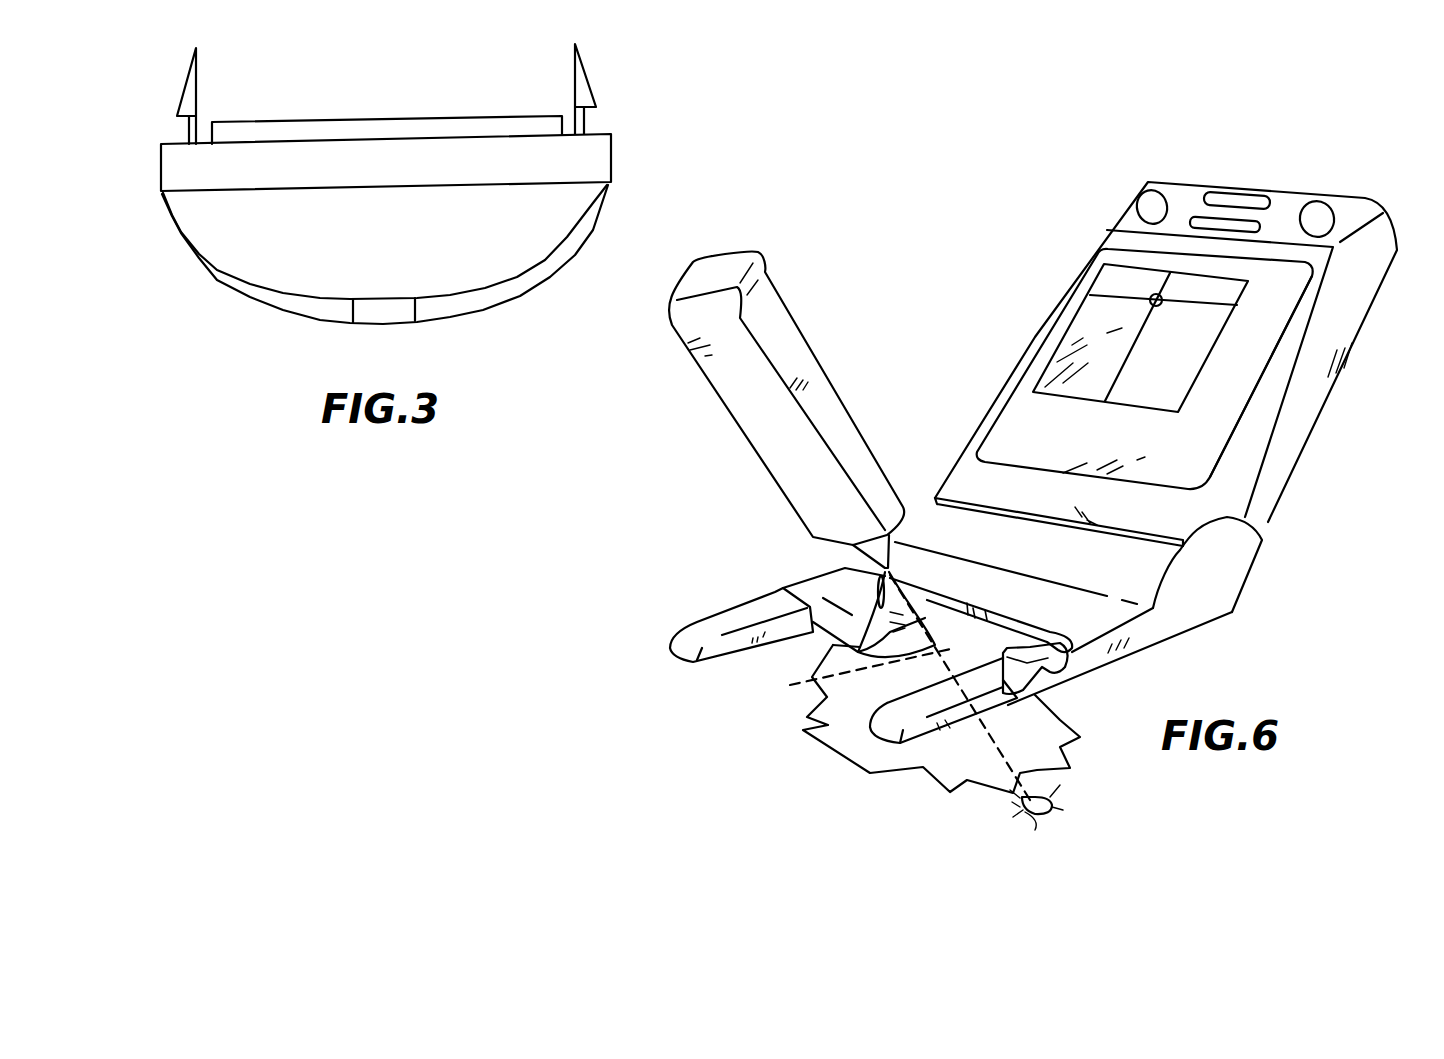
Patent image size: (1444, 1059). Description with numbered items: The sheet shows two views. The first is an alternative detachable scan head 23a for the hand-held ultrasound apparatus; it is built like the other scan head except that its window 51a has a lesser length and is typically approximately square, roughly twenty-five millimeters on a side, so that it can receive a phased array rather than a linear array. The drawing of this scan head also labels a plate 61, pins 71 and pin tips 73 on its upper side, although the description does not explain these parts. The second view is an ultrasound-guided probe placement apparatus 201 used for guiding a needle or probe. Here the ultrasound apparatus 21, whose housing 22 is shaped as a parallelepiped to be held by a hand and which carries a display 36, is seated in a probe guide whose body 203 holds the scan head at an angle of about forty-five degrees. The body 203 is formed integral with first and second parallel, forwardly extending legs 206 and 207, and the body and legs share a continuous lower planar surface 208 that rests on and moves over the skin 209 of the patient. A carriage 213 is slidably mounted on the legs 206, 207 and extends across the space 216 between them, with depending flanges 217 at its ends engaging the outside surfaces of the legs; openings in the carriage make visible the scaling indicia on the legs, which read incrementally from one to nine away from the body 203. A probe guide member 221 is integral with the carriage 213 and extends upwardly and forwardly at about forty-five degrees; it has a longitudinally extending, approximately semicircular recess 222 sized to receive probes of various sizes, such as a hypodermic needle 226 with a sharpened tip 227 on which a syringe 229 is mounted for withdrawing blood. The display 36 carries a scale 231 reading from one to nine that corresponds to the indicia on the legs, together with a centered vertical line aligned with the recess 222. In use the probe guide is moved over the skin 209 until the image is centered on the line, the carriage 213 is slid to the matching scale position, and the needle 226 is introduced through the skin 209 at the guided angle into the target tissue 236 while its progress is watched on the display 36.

In FIG. 3, the scan head 23a is at (616, 237).
In FIG. 3, the window 51a is at (415, 313).
In FIG. 3, the plate 61 is at (416, 122).
In FIG. 3, the pin 71 is at (197, 123).
In FIG. 3, the pin tip 73 is at (188, 107).
In FIG. 6, the ultrasound-guided probe placement apparatus 201 is at (934, 134).
In FIG. 6, the ultrasound apparatus 21 is at (1160, 147).
In FIG. 6, the display 36 is at (1385, 212).
In FIG. 6, the housing 22 is at (1345, 347).
In FIG. 6, the scale 231 is at (1247, 360).
In FIG. 6, the target tissue 236 is at (1154, 296).
In FIG. 6, the body 203 is at (1223, 595).
In FIG. 6, the skin 209 is at (1232, 614).
In FIG. 6, the lower planar surface 208 is at (1143, 652).
In FIG. 6, the probe guide member 221 is at (893, 580).
In FIG. 6, the leg 207 is at (927, 740).
In FIG. 6, the leg 206 is at (681, 637).
In FIG. 6, the recess 222 is at (797, 581).
In FIG. 6, the carriage 213 is at (799, 559).
In FIG. 6, the hypodermic needle 226 is at (842, 674).
In FIG. 6, the depending flange 217 is at (1005, 814).
In FIG. 6, the sharpened tip 227 is at (1046, 818).
In FIG. 6, the space 216 is at (828, 720).
In FIG. 6, the syringe 229 is at (735, 393).